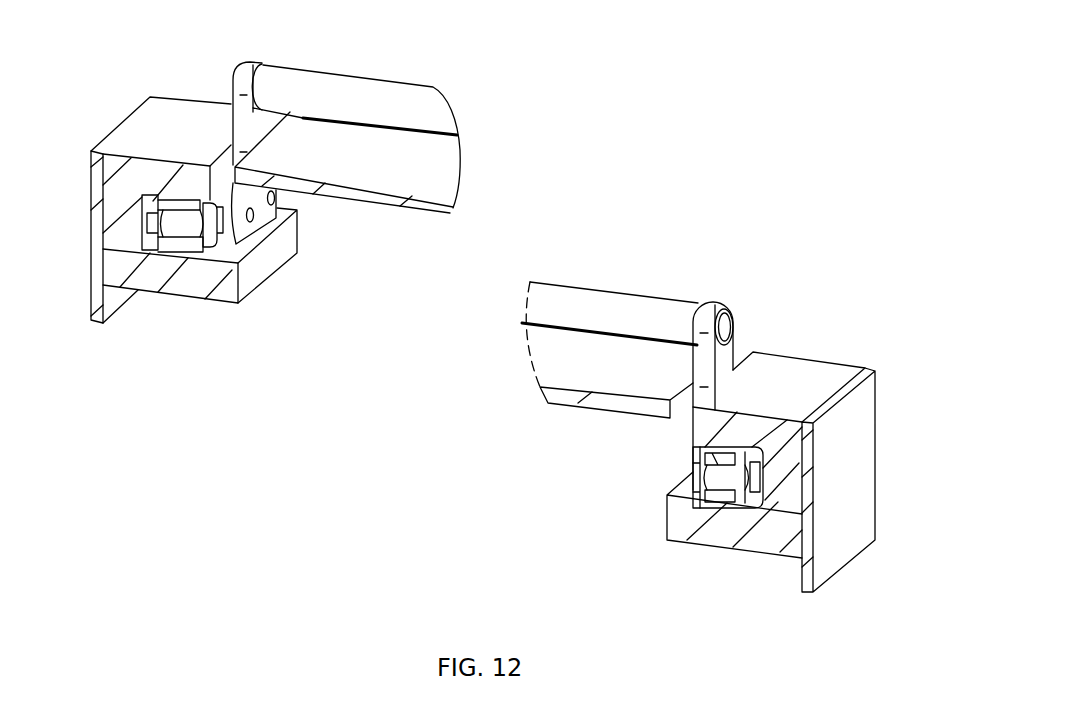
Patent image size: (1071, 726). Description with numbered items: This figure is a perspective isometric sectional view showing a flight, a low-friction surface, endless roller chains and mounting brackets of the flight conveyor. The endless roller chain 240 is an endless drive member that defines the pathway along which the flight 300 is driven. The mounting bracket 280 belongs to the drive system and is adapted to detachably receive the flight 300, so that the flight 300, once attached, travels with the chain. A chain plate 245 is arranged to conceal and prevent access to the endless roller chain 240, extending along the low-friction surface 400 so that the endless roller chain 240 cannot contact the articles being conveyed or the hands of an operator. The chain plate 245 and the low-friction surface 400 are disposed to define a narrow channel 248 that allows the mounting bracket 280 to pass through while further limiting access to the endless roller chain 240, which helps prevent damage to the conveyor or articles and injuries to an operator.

The narrow channel 248 is at (222, 172).
The low-friction surface 400 is at (382, 197).
The flight 300 is at (561, 300).
The mounting bracket 280 is at (713, 302).
The chain plate 245 is at (752, 370).
The endless roller chain 240 is at (690, 477).